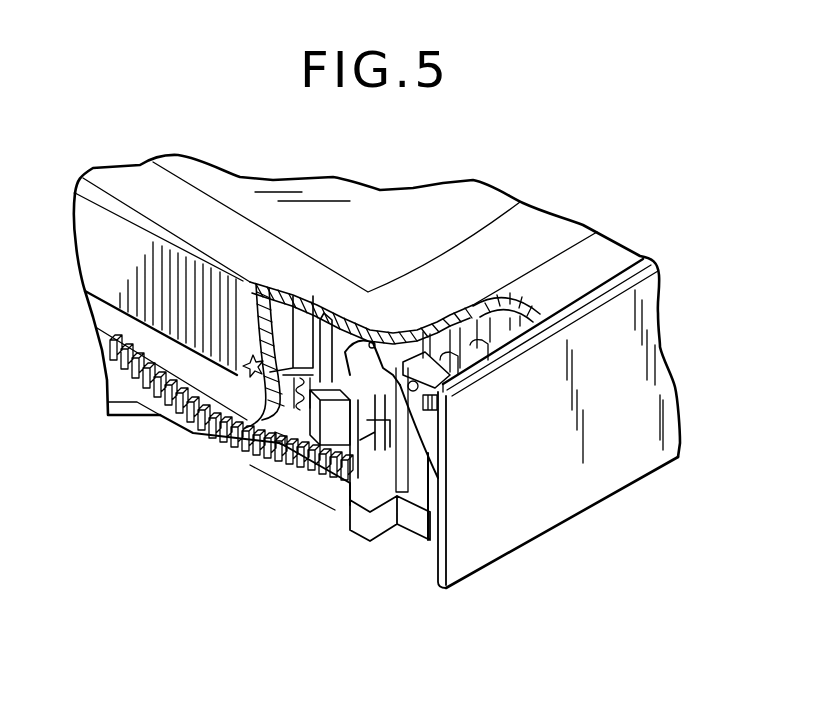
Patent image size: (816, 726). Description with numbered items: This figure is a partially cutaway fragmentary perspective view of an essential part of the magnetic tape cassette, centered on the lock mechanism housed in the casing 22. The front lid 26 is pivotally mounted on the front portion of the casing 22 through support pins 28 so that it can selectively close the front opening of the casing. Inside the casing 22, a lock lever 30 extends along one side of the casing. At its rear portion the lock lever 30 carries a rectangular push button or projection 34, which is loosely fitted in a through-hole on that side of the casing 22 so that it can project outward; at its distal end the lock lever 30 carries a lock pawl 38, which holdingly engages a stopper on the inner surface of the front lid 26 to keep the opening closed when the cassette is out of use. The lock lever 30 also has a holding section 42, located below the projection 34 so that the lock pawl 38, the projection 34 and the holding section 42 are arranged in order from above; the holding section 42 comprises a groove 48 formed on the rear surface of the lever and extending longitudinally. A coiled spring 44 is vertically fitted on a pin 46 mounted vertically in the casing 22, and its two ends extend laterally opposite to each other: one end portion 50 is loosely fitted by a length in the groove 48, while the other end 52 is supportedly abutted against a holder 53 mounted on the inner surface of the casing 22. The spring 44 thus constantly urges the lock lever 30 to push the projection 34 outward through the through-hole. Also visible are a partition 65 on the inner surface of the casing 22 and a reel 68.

The casing 22 is at (558, 220).
The front lid 26 is at (614, 475).
The support pins 28 is at (422, 358).
The lock lever 30 is at (350, 342).
The push button or projection 34 is at (300, 467).
The lock pawl 38 is at (445, 414).
The holding section 42 is at (430, 460).
The groove 48 is at (402, 430).
The spring 44 is at (292, 442).
The pin 46 is at (292, 322).
The one end portion of the spring 50 is at (362, 420).
The other end of the coiled spring 52 is at (278, 440).
The holder 53 is at (250, 372).
The partition 65 is at (405, 515).
The reel 68 is at (183, 428).